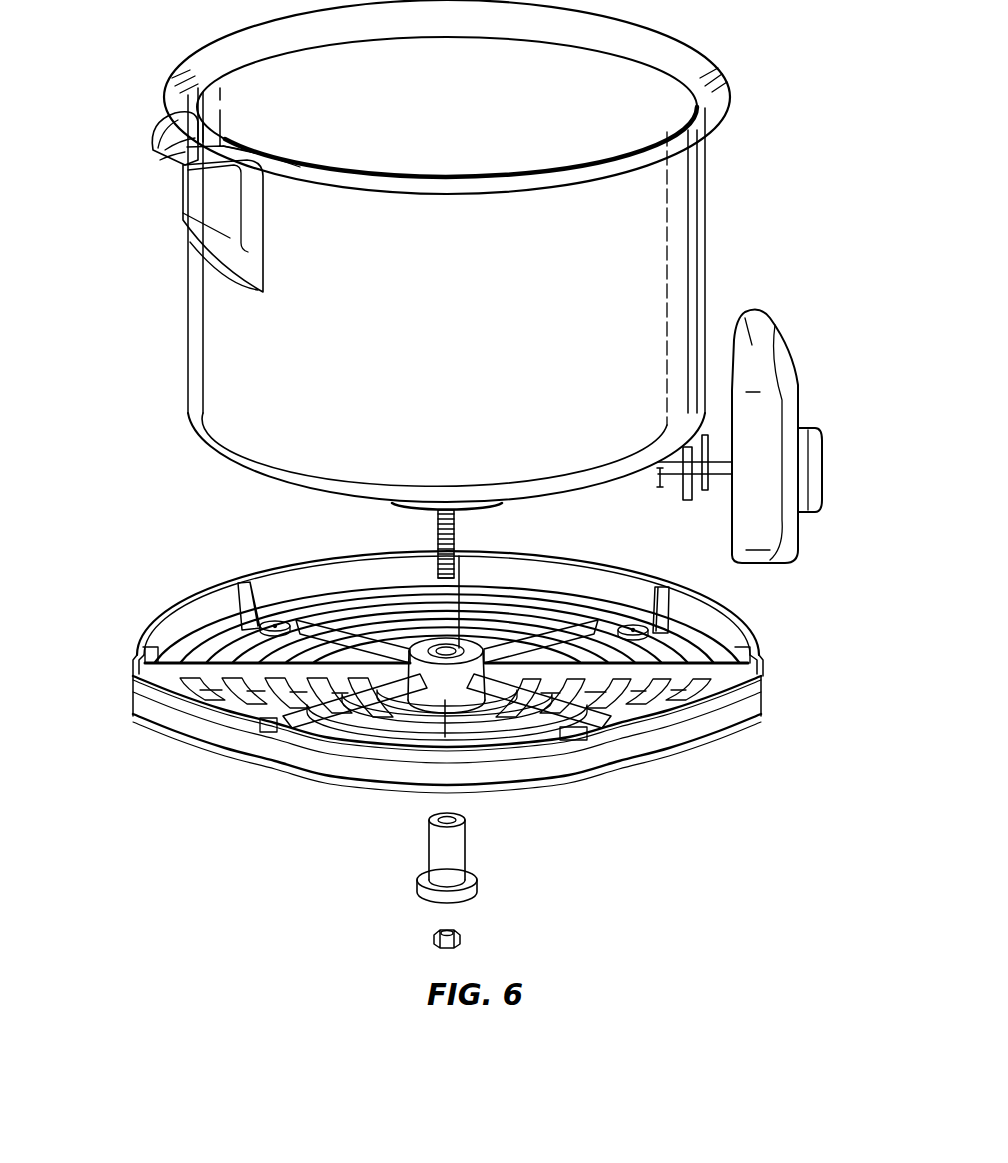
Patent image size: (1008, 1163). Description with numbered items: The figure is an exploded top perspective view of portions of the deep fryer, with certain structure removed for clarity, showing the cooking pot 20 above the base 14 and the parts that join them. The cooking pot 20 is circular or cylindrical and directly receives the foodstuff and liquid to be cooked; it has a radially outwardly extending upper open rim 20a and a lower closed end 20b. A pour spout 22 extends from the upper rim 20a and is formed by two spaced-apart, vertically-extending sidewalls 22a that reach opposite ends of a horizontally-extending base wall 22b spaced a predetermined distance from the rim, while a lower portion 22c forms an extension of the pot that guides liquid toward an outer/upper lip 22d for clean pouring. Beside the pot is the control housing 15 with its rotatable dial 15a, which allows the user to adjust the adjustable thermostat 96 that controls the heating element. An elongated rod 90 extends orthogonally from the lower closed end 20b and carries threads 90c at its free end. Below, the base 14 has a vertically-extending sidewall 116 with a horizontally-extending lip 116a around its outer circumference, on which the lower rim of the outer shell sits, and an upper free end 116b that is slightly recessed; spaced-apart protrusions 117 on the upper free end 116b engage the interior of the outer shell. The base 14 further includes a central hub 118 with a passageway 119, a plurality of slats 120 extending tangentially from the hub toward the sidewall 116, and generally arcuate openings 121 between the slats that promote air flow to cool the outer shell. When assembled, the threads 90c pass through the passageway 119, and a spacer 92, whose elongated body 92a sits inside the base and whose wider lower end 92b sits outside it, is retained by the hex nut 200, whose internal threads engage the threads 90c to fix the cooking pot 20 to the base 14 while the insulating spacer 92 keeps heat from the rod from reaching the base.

The base 14 is at (435, 697).
The control housing 15 is at (817, 436).
The rotatable dial 15a is at (822, 468).
The cooking pot 20 is at (447, 259).
The upper open rim 20a is at (215, 38).
The lower closed end 20b is at (257, 480).
The pour spout 22 is at (214, 190).
The sidewalls 22a is at (175, 130).
The base wall 22b is at (186, 150).
The lower portion 22c is at (196, 202).
The outer/upper lip 22d is at (170, 160).
The elongated rod 90 is at (412, 579).
The threads 90c is at (438, 568).
The spacer 92 is at (402, 859).
The elongated body 92a is at (435, 830).
The lower end 92b is at (428, 850).
The adjustable thermostat 96 is at (680, 512).
The sidewall 116 is at (398, 734).
The lip 116a is at (143, 690).
The upper free end 116b is at (197, 706).
The protrusions 117 is at (282, 712).
The central hub 118 is at (435, 680).
The passageway 119 is at (446, 647).
The slats 120 is at (210, 676).
The arcuate openings 121 is at (745, 642).
The hex nut 200 is at (434, 938).